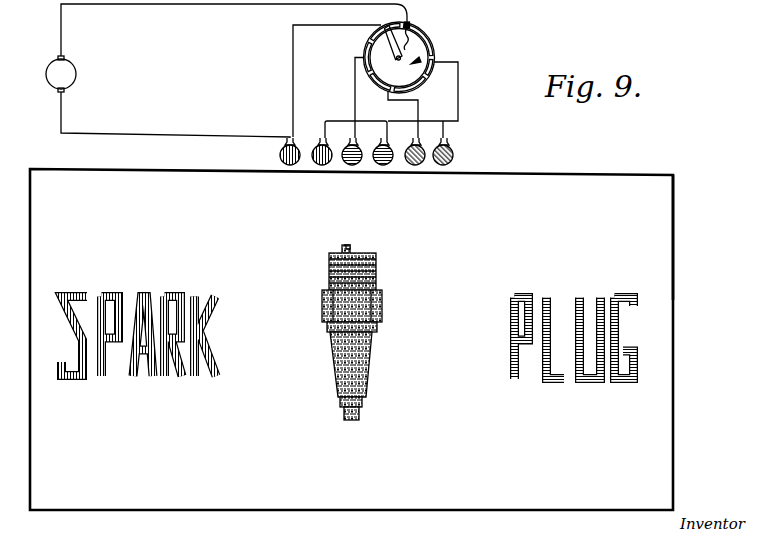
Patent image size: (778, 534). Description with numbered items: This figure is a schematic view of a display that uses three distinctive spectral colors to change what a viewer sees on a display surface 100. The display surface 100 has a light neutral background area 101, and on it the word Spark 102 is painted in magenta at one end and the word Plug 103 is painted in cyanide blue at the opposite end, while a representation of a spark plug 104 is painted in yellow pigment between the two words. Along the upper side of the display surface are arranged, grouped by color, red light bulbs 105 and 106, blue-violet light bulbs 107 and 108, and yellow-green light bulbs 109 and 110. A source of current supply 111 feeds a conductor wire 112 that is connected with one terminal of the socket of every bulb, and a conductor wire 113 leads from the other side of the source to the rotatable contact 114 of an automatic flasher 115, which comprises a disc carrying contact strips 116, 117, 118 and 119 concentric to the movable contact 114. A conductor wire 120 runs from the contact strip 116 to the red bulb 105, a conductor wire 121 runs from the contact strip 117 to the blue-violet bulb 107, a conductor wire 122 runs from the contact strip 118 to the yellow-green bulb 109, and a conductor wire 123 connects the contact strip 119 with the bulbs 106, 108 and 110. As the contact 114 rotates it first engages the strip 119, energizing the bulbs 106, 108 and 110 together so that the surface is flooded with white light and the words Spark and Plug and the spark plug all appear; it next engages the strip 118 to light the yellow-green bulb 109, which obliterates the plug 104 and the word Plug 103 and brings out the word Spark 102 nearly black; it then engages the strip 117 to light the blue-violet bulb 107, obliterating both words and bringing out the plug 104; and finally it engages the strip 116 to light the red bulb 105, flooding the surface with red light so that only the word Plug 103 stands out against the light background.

The display surface 100 is at (660, 252).
The light neutral background area 101 is at (662, 278).
The word Spark 102 is at (152, 382).
The word Plug 103 is at (552, 383).
The representation of a spark plug 104 is at (342, 390).
The red light bulb 105 is at (282, 155).
The red light bulb 106 is at (317, 163).
The blue-violet light bulb 107 is at (351, 165).
The blue-violet light bulb 108 is at (383, 166).
The yellow-green light bulb 109 is at (412, 165).
The yellow-green light bulb 110 is at (454, 155).
The source of current supply 111 is at (77, 71).
The conductor wire 112 is at (167, 133).
The conductor wire 113 is at (187, 5).
The rotatable contact 114 is at (402, 57).
The automatic flasher 115 is at (419, 59).
The contact strip 116 is at (378, 32).
The contact strip 117 is at (367, 50).
The contact strip 118 is at (380, 89).
The contact strip 119 is at (421, 80).
The conductor wire 120 is at (293, 50).
The conductor wire 121 is at (355, 97).
The conductor wire 122 is at (419, 108).
The conductor wire 123 is at (462, 90).